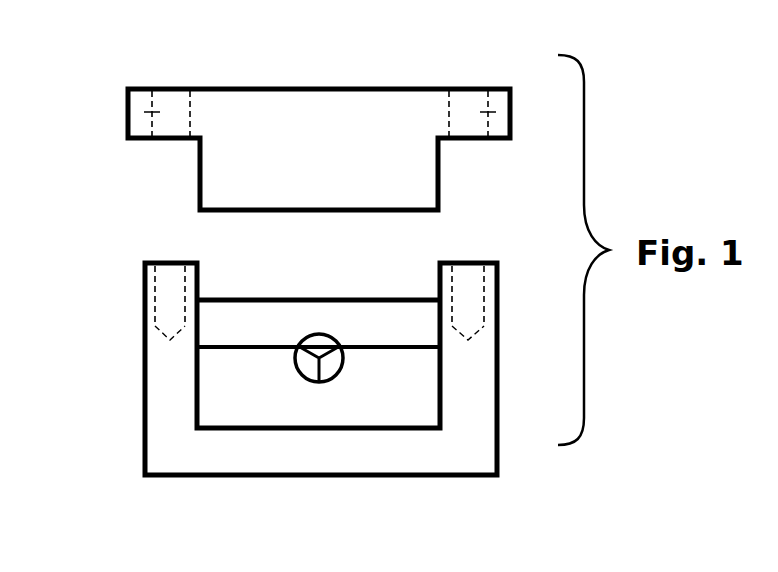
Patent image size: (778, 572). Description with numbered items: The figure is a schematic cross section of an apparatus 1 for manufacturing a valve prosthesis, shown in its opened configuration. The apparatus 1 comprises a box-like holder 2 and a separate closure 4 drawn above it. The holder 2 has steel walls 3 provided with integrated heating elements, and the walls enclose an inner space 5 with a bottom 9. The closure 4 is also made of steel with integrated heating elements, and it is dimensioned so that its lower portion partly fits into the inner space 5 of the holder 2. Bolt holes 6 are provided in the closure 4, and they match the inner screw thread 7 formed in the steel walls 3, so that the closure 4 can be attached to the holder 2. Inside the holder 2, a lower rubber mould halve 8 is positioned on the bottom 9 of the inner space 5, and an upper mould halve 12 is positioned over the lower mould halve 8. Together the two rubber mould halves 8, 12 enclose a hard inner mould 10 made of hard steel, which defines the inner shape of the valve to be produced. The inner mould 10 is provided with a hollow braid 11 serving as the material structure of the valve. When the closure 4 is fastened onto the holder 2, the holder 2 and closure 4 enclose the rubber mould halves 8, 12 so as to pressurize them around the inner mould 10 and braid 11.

The apparatus 1 is at (98, 52).
The holder 2 is at (98, 440).
The steel walls 3 is at (232, 452).
The closure 4 is at (318, 116).
The inner space 5 is at (233, 270).
The bolt holes 6 is at (160, 112).
The inner screw thread 7 is at (148, 296).
The lower rubber mould halve 8 is at (323, 410).
The bottom 9 is at (413, 430).
The inner mould 10 is at (332, 364).
The hollow braid 11 is at (315, 332).
The upper mould halve 12 is at (388, 320).